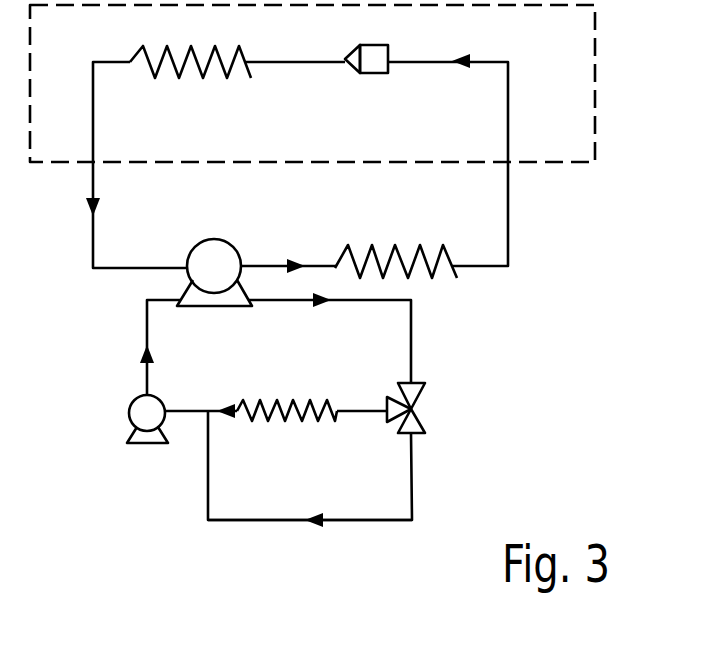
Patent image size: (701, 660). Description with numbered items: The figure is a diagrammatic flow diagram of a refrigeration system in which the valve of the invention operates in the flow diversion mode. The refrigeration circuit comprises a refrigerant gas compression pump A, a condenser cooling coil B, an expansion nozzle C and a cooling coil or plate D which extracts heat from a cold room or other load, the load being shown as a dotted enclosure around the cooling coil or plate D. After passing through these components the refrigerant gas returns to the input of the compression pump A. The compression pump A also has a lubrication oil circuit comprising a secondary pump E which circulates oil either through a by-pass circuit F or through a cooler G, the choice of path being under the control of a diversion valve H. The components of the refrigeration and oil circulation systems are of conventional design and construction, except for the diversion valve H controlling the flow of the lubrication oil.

The refrigerant gas compression pump A is at (214, 255).
The condenser cooling coil B is at (396, 243).
The expansion nozzle C is at (366, 78).
The cooling coil or plate D is at (237, 78).
The secondary pump E is at (135, 419).
The by-pass circuit F is at (310, 539).
The cooler G is at (287, 393).
The diversion valve H is at (417, 408).